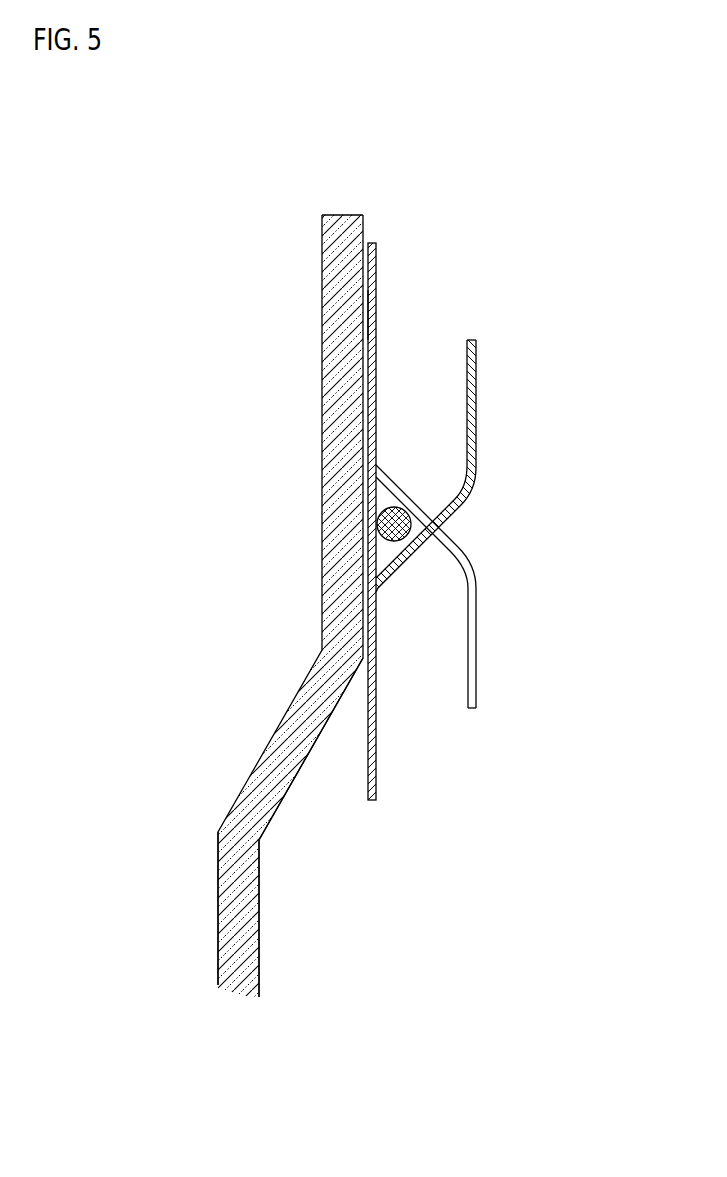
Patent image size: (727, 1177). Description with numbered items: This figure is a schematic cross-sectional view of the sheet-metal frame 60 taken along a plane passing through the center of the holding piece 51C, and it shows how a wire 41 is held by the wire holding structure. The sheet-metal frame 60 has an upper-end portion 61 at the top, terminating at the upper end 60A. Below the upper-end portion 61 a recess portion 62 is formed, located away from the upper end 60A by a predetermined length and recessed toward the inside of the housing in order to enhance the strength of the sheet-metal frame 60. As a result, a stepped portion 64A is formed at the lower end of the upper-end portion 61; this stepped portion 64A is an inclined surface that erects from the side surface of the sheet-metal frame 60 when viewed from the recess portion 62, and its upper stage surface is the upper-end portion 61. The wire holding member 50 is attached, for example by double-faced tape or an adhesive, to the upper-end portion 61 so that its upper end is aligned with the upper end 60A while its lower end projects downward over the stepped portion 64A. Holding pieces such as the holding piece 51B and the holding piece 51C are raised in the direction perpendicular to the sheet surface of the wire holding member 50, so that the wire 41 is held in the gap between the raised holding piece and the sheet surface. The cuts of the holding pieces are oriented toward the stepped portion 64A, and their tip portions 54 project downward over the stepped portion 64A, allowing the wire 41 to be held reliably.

The sheet-metal frame 60 is at (352, 591).
The upper end 60A is at (363, 216).
The wire holding member 50 is at (496, 521).
The upper-end portion 61 is at (366, 317).
The tip portions 54 is at (476, 350).
The holding piece 51C is at (476, 405).
The holding piece 51B is at (476, 631).
The wire 41 is at (398, 490).
The stepped portion 64A is at (298, 775).
The recess portion 62 is at (258, 908).